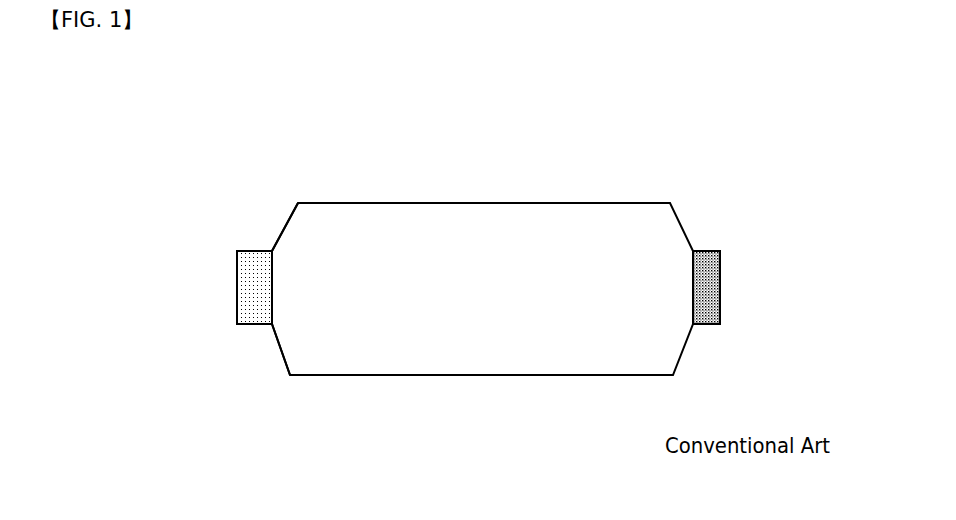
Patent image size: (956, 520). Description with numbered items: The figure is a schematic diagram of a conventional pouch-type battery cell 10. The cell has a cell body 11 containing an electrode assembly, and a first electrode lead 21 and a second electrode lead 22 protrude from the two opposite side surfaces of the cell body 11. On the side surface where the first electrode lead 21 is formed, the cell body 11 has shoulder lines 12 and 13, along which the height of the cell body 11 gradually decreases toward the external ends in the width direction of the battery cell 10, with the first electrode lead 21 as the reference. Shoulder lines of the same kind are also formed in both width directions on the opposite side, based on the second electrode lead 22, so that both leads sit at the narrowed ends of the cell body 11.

The battery cell 10 is at (143, 100).
The cell body 11 is at (505, 203).
The shoulder line 12 is at (286, 224).
The shoulder line 13 is at (279, 351).
The first electrode lead 21 is at (237, 284).
The second electrode lead 22 is at (720, 284).